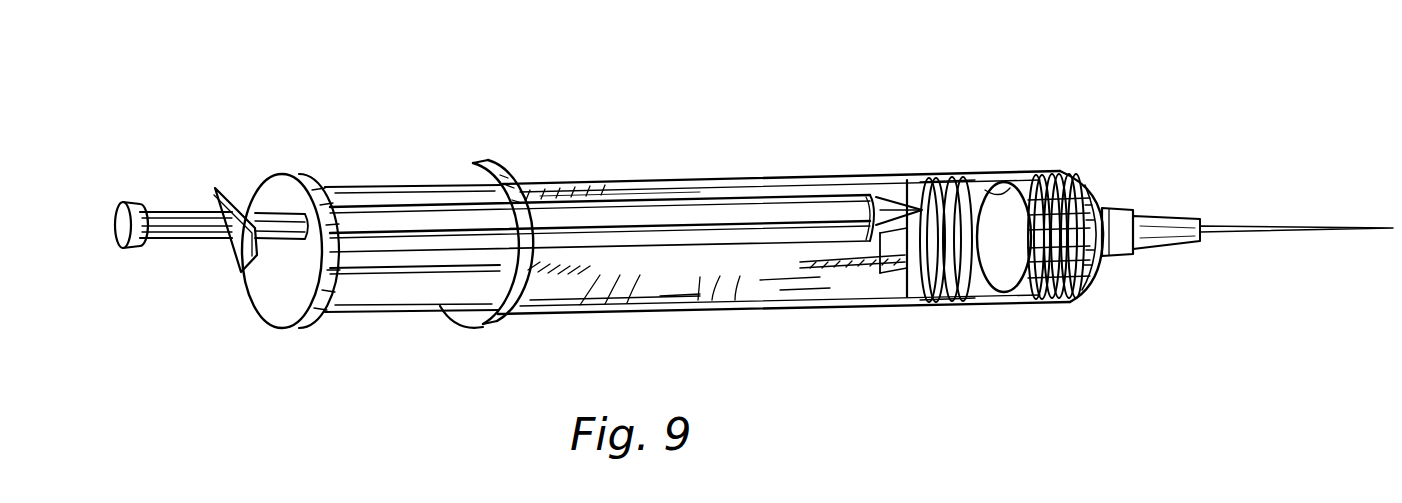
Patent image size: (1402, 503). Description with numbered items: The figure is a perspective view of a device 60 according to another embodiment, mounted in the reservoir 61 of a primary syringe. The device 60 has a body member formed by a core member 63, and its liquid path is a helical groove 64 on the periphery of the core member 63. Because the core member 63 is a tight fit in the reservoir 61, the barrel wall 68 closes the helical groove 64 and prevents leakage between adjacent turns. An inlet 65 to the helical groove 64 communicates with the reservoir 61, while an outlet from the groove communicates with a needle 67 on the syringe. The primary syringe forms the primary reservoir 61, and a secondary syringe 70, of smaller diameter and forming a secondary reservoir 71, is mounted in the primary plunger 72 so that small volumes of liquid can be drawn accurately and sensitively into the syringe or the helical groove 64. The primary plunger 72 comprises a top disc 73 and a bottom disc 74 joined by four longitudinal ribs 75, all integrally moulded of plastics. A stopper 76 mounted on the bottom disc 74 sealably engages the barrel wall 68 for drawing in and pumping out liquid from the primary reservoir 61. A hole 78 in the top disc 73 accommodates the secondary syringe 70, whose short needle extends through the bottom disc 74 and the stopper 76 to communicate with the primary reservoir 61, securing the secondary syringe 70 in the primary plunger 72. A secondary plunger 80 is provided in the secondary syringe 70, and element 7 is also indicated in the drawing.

The cannula tip 7 is at (888, 190).
The device 60 is at (1072, 183).
The reservoir 61 is at (973, 187).
The core member 63 is at (1087, 273).
The helical groove 64 is at (1060, 300).
The inlet 65 is at (1002, 183).
The needle 67 is at (1260, 228).
The barrel wall 68 is at (780, 305).
The secondary syringe 70 is at (260, 190).
The secondary reservoir 71 is at (820, 190).
The primary plunger 72 is at (433, 295).
The top disc 73 is at (288, 304).
The bottom disc 74 is at (918, 277).
The longitudinal ribs 75 is at (385, 295).
The stopper 76 is at (963, 303).
The hole 78 is at (289, 240).
The secondary plunger 80 is at (168, 240).